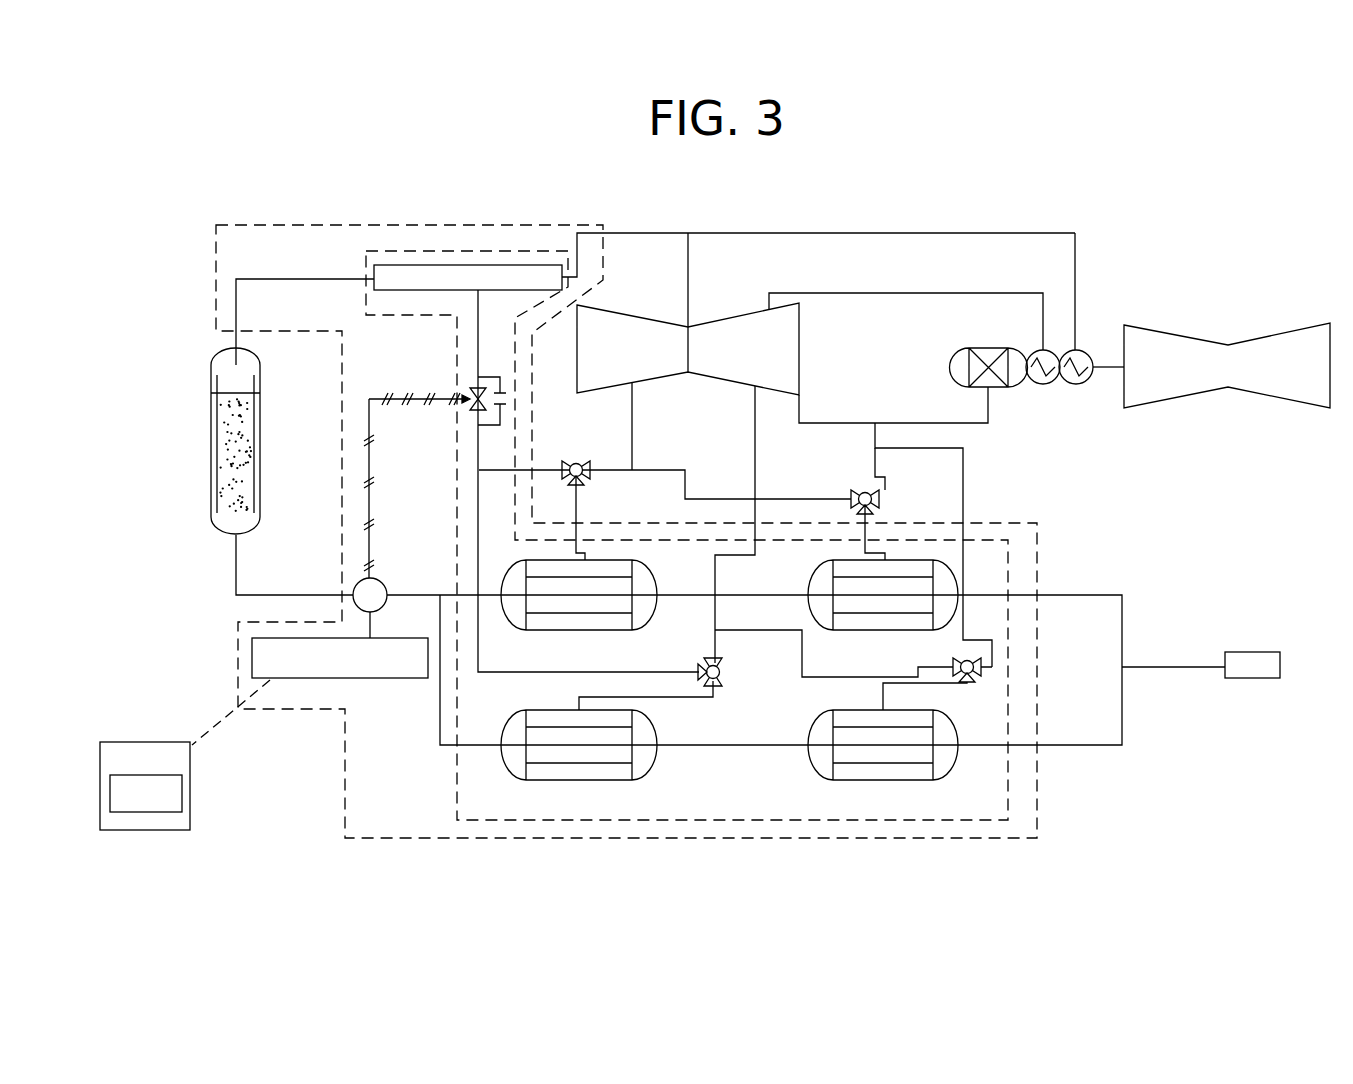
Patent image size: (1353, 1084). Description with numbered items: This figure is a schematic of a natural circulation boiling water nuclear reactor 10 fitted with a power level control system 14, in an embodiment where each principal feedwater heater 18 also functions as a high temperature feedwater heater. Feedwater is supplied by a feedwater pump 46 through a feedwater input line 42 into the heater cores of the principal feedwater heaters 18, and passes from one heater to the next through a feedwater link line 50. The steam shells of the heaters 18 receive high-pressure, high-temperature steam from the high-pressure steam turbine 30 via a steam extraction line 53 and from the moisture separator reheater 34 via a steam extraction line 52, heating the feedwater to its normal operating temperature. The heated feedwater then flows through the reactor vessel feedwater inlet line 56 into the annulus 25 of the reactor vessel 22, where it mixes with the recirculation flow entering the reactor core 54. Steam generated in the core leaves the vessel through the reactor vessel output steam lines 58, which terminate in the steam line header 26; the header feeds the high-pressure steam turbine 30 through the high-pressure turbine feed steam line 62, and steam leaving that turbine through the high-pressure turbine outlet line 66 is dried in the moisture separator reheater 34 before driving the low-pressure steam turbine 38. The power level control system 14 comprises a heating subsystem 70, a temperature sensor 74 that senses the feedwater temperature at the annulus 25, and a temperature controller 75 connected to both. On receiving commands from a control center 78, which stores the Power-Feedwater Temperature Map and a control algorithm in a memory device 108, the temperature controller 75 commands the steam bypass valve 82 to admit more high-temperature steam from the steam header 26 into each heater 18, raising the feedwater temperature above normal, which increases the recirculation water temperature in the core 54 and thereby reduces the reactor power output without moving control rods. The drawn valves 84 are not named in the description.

The natural circulation boiling water nuclear reactor 10 is at (1150, 268).
The power level control system 14 is at (604, 226).
The principal feedwater heater 18 is at (651, 603).
The reactor vessel 22 is at (213, 516).
The annulus 25 is at (212, 404).
The steam line header 26 is at (520, 266).
The high-pressure steam turbine 30 is at (715, 330).
The moisture separator reheater 34 is at (958, 350).
The low-pressure steam turbine 38 is at (1218, 383).
The feedwater input line 42 is at (1183, 665).
The feedwater pump 46 is at (1268, 675).
The feedwater link line 50 is at (752, 595).
The steam extraction line 52 is at (963, 425).
The steam extraction line 53 is at (632, 448).
The reactor core 54 is at (222, 445).
The reactor vessel feedwater inlet line 56 is at (233, 566).
The reactor vessel output steam line 58 is at (235, 302).
The high-pressure turbine feed steam line 62 is at (688, 279).
The high-pressure turbine outlet line 66 is at (828, 423).
The heating subsystem 70 is at (452, 785).
The temperature sensor 74 is at (386, 582).
The temperature controller 75 is at (405, 680).
The control center 78 is at (148, 833).
The steam bypass valve 82 is at (471, 392).
The valve 84 is at (478, 362).
The memory device 108 is at (183, 790).